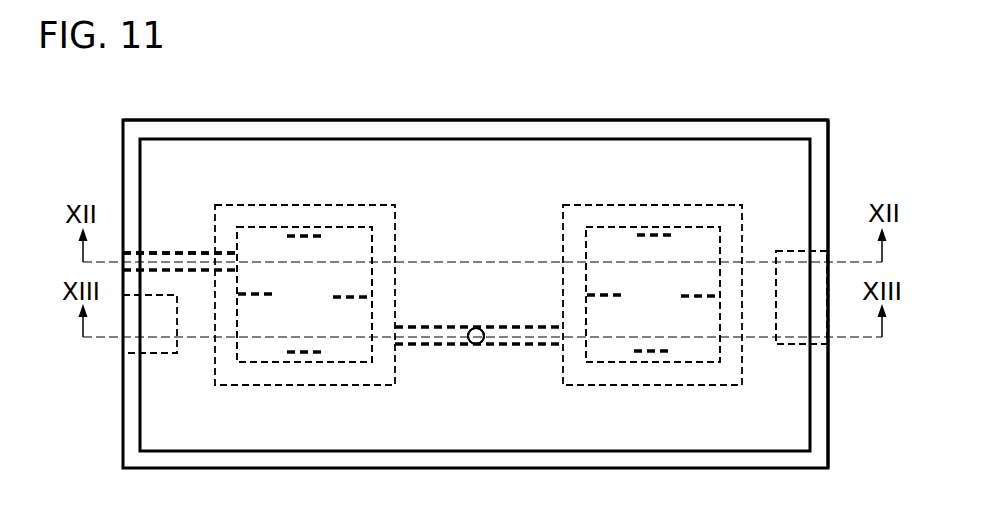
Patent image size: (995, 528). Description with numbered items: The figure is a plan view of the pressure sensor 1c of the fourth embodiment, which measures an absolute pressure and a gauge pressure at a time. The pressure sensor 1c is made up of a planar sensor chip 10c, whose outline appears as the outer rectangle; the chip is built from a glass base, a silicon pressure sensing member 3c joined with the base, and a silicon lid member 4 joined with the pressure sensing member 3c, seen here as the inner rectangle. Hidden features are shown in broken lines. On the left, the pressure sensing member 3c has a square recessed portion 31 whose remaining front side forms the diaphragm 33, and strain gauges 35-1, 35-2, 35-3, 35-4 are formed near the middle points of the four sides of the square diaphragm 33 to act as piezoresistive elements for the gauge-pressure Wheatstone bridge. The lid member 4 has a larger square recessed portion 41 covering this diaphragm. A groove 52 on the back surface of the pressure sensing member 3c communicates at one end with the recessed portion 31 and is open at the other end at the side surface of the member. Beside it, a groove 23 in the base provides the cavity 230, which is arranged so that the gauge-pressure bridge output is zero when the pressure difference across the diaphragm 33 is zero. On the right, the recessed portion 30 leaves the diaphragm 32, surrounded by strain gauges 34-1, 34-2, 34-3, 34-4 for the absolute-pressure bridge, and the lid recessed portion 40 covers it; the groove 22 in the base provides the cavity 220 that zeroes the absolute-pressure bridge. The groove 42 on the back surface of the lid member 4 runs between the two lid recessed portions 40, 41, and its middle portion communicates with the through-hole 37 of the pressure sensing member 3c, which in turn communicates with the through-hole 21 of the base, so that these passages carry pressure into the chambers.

The pressure sensor 1c is at (503, 96).
The sensor chip 10c is at (150, 120).
The pressure sensing member 3c is at (828, 140).
The lid member 4 is at (140, 410).
The recessed portion 41 is at (350, 204).
The recessed portion 31 is at (255, 226).
The diaphragm 33 is at (297, 285).
The strain gauge 35-1 is at (293, 233).
The strain gauge 35-2 is at (357, 297).
The strain gauge 35-3 is at (252, 297).
The strain gauge 35-4 is at (295, 352).
The cavity 230 is at (152, 288).
The groove 52 is at (180, 252).
The groove 23 is at (150, 353).
The groove 42 is at (533, 345).
The through-hole 21 is at (478, 345).
The through-hole 37 is at (476, 336).
The recessed portion 40 is at (633, 204).
The diaphragm 32 is at (655, 290).
The recessed portion 30 is at (722, 350).
The strain gauge 34-1 is at (664, 227).
The strain gauge 34-2 is at (687, 297).
The strain gauge 34-3 is at (597, 298).
The strain gauge 34-4 is at (653, 353).
The cavity 220 is at (792, 278).
The groove 22 is at (787, 343).